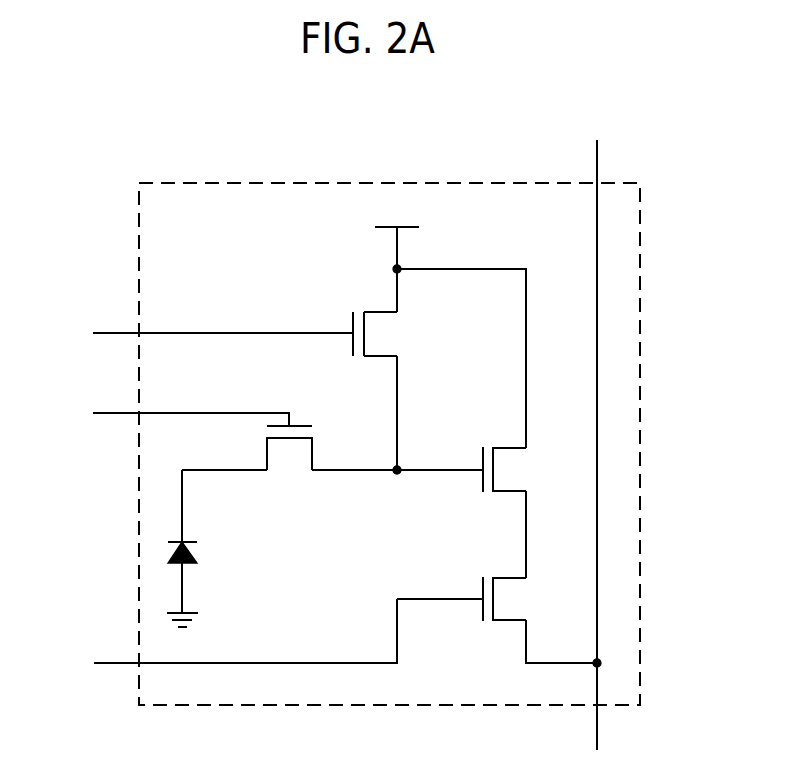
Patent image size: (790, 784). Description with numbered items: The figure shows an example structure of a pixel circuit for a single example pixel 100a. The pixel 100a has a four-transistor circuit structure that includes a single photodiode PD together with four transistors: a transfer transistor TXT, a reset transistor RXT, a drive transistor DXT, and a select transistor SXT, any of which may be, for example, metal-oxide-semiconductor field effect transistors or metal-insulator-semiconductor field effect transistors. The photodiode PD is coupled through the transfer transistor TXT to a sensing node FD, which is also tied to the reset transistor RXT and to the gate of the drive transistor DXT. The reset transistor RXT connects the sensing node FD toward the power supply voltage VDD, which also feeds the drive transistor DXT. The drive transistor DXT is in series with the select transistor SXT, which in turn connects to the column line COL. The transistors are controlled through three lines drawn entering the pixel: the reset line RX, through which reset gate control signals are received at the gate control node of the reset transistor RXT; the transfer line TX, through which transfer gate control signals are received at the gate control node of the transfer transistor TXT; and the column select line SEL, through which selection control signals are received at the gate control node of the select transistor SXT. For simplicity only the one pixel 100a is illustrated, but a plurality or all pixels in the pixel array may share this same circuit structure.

The pixel 100a is at (418, 166).
The column line COL is at (600, 163).
The power supply voltage VDD is at (397, 256).
The reset transistor RXT is at (396, 391).
The reset line RX is at (208, 336).
The sensing node FD is at (397, 459).
The transfer line TX is at (176, 414).
The transfer transistor TXT is at (247, 460).
The photodiode PD is at (198, 548).
The drive transistor DXT is at (526, 512).
The select transistor SXT is at (497, 620).
The column select line SEL is at (226, 638).